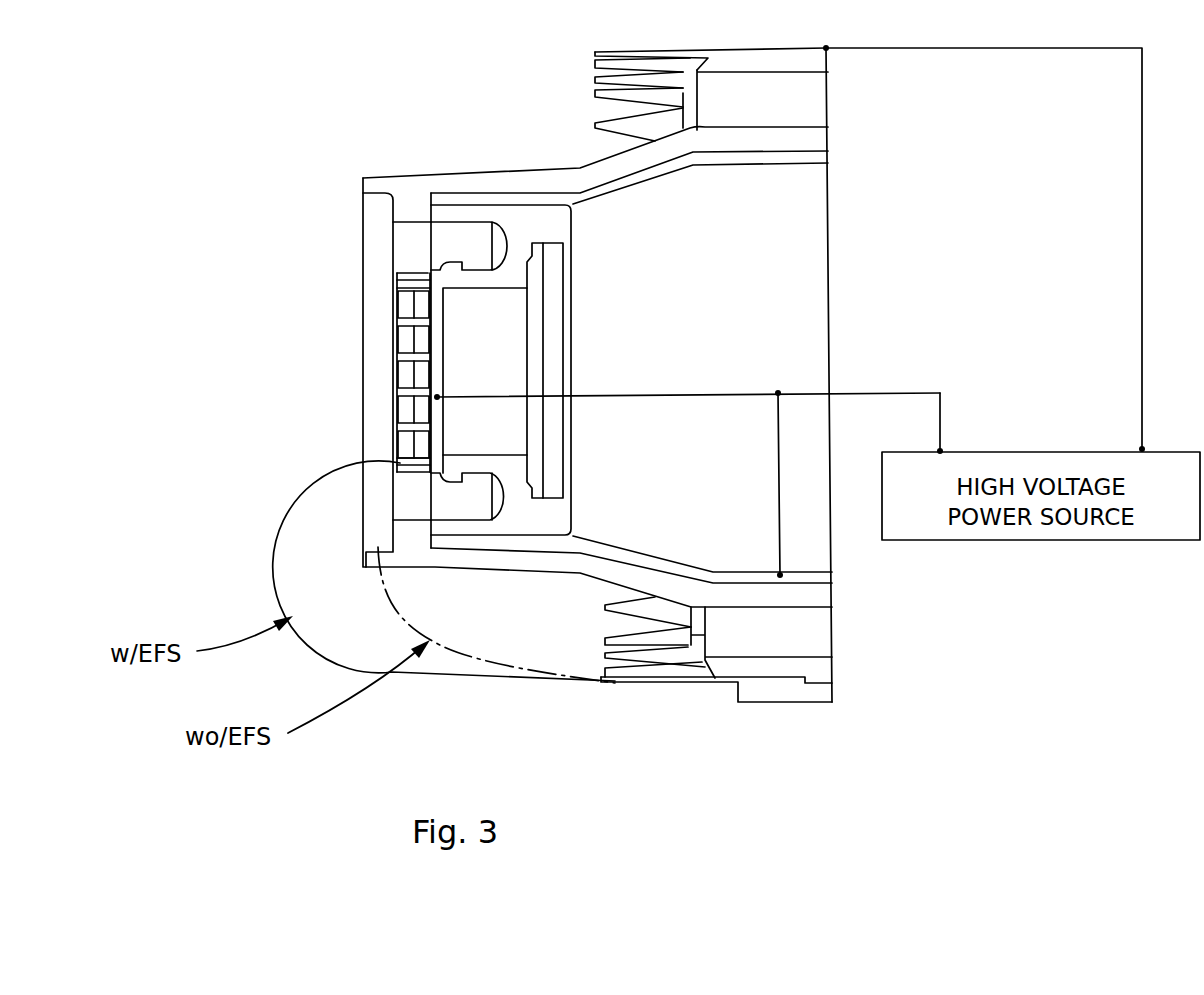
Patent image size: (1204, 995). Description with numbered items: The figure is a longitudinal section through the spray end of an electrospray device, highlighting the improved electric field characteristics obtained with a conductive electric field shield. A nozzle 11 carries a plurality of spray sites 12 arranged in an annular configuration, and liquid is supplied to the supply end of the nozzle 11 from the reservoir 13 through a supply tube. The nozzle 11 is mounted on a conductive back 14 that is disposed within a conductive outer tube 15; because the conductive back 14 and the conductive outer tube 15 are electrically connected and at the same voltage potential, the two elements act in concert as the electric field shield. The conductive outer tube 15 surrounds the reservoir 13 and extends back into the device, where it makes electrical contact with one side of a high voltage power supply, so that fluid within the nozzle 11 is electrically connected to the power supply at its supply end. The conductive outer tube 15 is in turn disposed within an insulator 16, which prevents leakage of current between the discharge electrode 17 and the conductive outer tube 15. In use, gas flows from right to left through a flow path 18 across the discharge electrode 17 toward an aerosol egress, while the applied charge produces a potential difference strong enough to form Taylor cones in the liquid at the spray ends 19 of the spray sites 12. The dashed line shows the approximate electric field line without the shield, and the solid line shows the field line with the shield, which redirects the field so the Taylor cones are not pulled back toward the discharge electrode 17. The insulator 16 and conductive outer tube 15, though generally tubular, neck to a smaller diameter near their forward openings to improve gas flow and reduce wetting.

The nozzle 11 is at (427, 282).
The spray sites 12 is at (421, 308).
The reservoir 13 is at (752, 350).
The conductive back 14 is at (522, 227).
The conductive outer tube 15 is at (467, 197).
The insulator 16 is at (760, 592).
The discharge electrode 17 is at (638, 683).
The flow path 18 is at (795, 105).
The spray ends 19 is at (396, 340).